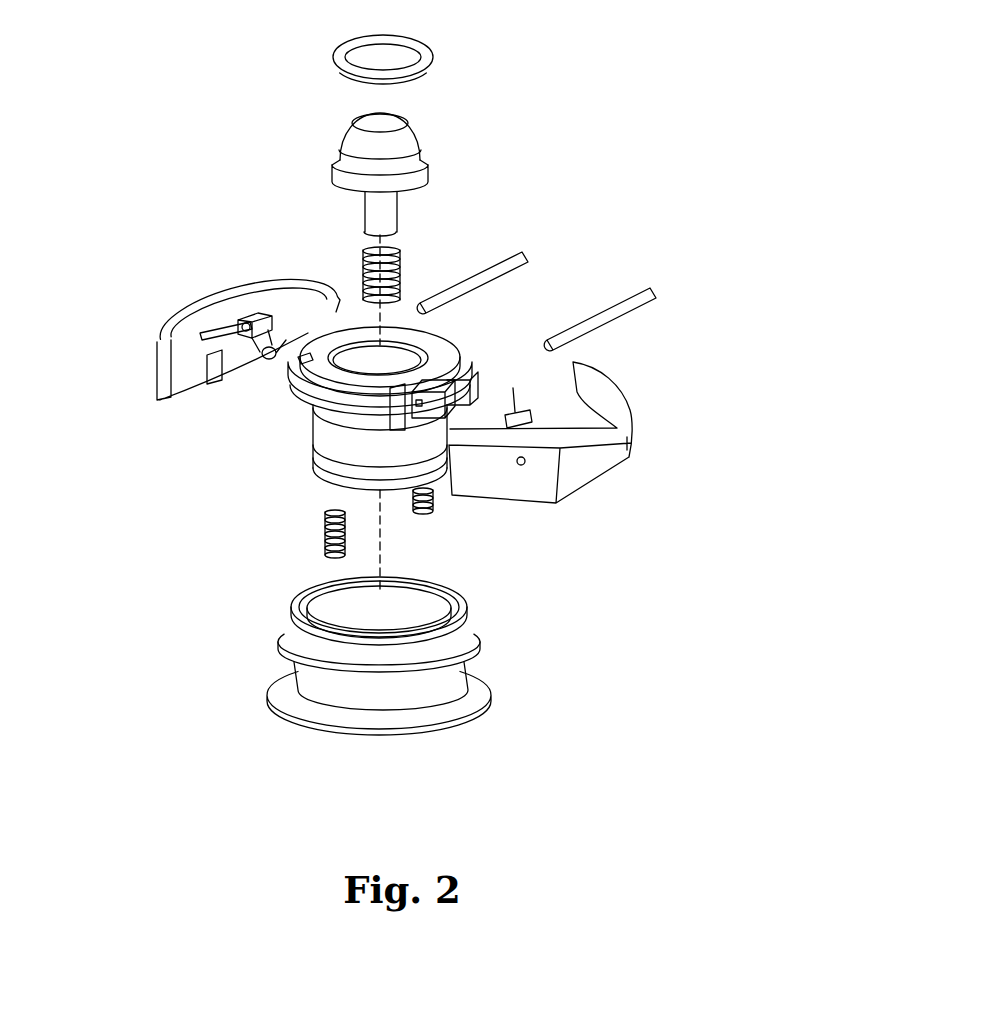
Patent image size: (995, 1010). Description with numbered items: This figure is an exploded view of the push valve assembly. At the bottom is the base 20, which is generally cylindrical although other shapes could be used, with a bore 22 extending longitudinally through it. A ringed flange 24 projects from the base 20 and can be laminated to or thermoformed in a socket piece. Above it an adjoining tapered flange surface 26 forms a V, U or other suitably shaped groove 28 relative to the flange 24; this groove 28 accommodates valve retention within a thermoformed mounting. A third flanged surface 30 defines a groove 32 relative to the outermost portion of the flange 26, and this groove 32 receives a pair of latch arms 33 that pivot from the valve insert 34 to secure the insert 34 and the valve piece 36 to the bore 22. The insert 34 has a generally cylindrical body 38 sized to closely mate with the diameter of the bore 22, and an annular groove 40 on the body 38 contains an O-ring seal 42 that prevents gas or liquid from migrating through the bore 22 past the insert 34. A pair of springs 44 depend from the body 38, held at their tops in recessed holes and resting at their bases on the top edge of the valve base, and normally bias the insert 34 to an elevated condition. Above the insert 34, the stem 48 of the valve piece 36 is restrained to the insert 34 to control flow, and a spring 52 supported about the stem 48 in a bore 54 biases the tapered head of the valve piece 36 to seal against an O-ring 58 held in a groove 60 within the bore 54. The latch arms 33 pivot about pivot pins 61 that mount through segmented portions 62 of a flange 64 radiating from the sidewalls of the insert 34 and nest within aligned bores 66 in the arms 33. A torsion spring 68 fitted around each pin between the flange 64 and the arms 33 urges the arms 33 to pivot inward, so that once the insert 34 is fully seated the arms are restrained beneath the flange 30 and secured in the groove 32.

The base 20 is at (308, 673).
The bore 22 is at (355, 605).
The ringed flange 24 is at (488, 703).
The tapered flange surface 26 is at (282, 638).
The groove 28 is at (470, 675).
The third flanged surface 30 is at (302, 600).
The groove 32 is at (472, 613).
The latch arms 33 is at (402, 391).
The valve insert 34 is at (416, 436).
The valve piece 36 is at (352, 160).
The cylindrical body 38 is at (322, 431).
The annular groove 40 is at (316, 471).
The O-ring seal 42 is at (316, 455).
The springs 44 is at (425, 512).
The stem 48 is at (402, 205).
The spring 52 is at (362, 272).
The bore 54 is at (426, 140).
The O-ring 58 is at (432, 48).
The groove 60 is at (400, 332).
The pivot pins 61 is at (528, 254).
The segmented portions 62 is at (430, 403).
The flange 64 is at (452, 338).
The aligned bores 66 is at (522, 461).
The torsion spring 68 is at (266, 358).